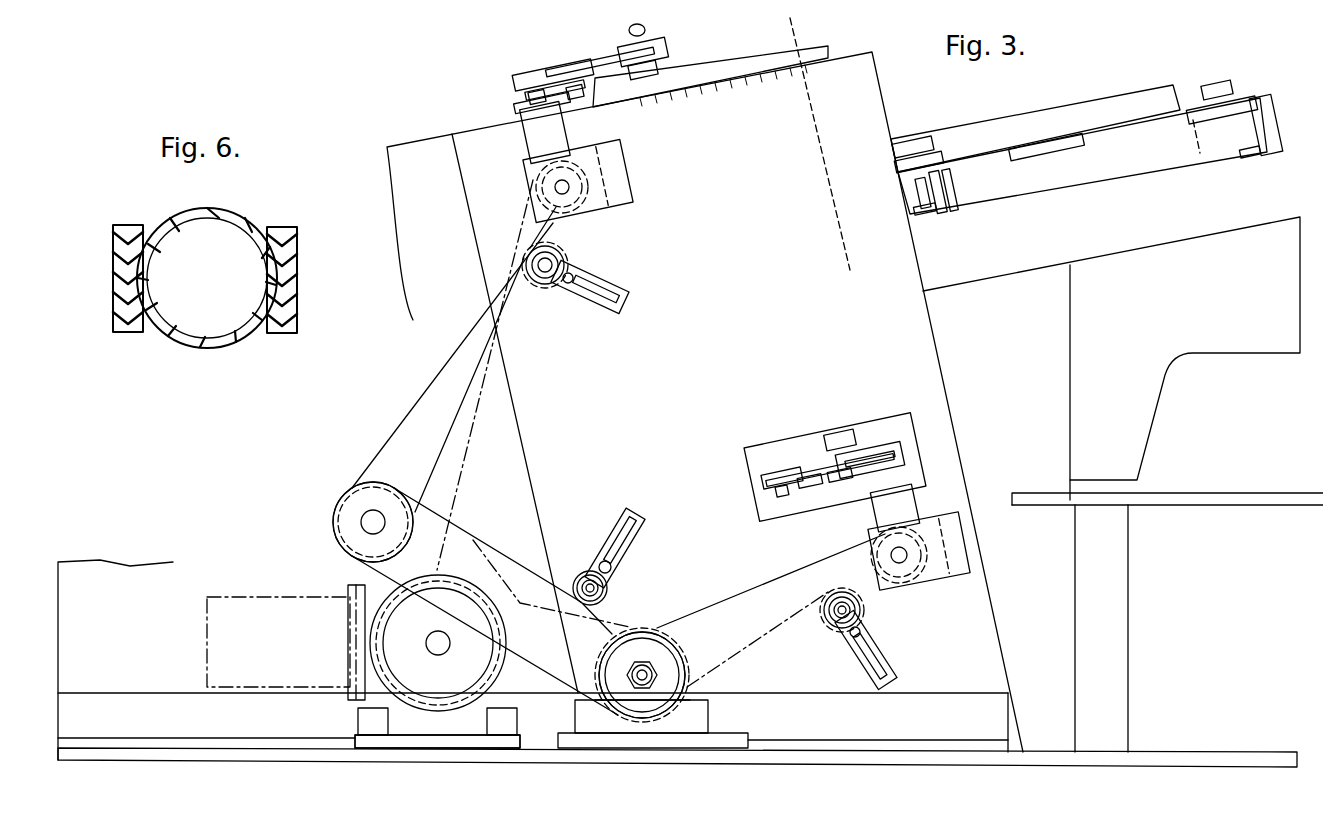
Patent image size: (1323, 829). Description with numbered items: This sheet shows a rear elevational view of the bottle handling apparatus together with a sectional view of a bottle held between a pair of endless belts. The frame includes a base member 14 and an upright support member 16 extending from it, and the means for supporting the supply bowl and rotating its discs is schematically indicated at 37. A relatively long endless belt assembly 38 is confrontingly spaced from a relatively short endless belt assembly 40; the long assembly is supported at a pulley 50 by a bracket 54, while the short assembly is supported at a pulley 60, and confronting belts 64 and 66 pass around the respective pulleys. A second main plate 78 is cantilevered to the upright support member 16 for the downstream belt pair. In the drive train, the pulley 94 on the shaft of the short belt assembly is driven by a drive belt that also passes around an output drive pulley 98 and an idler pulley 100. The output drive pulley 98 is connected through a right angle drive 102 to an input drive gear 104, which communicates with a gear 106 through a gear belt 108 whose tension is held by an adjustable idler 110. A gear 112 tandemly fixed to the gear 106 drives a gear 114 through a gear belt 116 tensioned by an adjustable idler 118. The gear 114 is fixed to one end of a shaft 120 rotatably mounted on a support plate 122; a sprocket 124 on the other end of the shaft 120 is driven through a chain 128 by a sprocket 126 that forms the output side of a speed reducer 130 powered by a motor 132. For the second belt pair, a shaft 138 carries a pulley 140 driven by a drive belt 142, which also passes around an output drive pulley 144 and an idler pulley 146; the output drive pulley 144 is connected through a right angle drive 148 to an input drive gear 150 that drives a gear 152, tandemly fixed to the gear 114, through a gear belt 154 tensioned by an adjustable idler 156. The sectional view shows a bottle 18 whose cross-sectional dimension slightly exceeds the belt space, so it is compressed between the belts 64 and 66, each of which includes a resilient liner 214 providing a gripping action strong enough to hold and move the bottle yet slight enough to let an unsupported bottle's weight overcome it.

In FIG. 3, the base member 14 is at (905, 752).
In FIG. 3, the upright support member 16 is at (732, 362).
In FIG. 6, the bottle 18 is at (238, 226).
In FIG. 3, the means for supporting the bowl and rotating the discs 37 is at (1190, 353).
In FIG. 3, the endless belt assembly 38 is at (1290, 112).
In FIG. 3, the endless belt assembly 40 is at (962, 194).
In FIG. 3, the pulley 50 is at (1263, 156).
In FIG. 3, the bracket 54 is at (1153, 90).
In FIG. 3, the pulley 60 is at (925, 216).
In FIG. 6, the belt 64 is at (282, 336).
In FIG. 3, the belt 64 is at (1097, 160).
In FIG. 6, the belt 66 is at (285, 230).
In FIG. 3, the belt 66 is at (930, 208).
In FIG. 3, the main plate 78 is at (800, 435).
In FIG. 3, the pulley 94 is at (588, 60).
In FIG. 3, the output drive pulley 98 is at (520, 70).
In FIG. 3, the idler pulley 100 is at (662, 42).
In FIG. 3, the right angle drive 102 is at (530, 145).
In FIG. 3, the input drive gear 104 is at (548, 186).
In FIG. 3, the gear 106 is at (340, 526).
In FIG. 3, the gear belt 108 is at (392, 408).
In FIG. 3, the adjustable idler 110 is at (545, 290).
In FIG. 3, the gear 112 is at (340, 526).
In FIG. 3, the gear 114 is at (688, 655).
In FIG. 3, the gear belt 116 is at (463, 537).
In FIG. 3, the adjustable idler 118 is at (580, 572).
In FIG. 3, the shaft 120 is at (648, 676).
In FIG. 3, the support plate 122 is at (700, 716).
In FIG. 3, the sprocket 124 is at (636, 708).
In FIG. 3, the sprocket 126 is at (445, 710).
In FIG. 3, the chain 128 is at (520, 602).
In FIG. 3, the speed reducer 130 is at (438, 640).
In FIG. 3, the motor 132 is at (293, 651).
In FIG. 3, the shaft 138 is at (852, 428).
In FIG. 3, the pulley 140 is at (840, 482).
In FIG. 3, the drive belt 142 is at (812, 486).
In FIG. 3, the output drive pulley 144 is at (905, 452).
In FIG. 3, the idler pulley 146 is at (752, 476).
In FIG. 3, the right angle drive 148 is at (912, 497).
In FIG. 3, the input drive gear 150 is at (922, 575).
In FIG. 3, the gear 152 is at (688, 655).
In FIG. 3, the gear belt 154 is at (768, 588).
In FIG. 3, the adjustable idler 156 is at (866, 615).
In FIG. 6, the resilient liner 214 is at (128, 232).